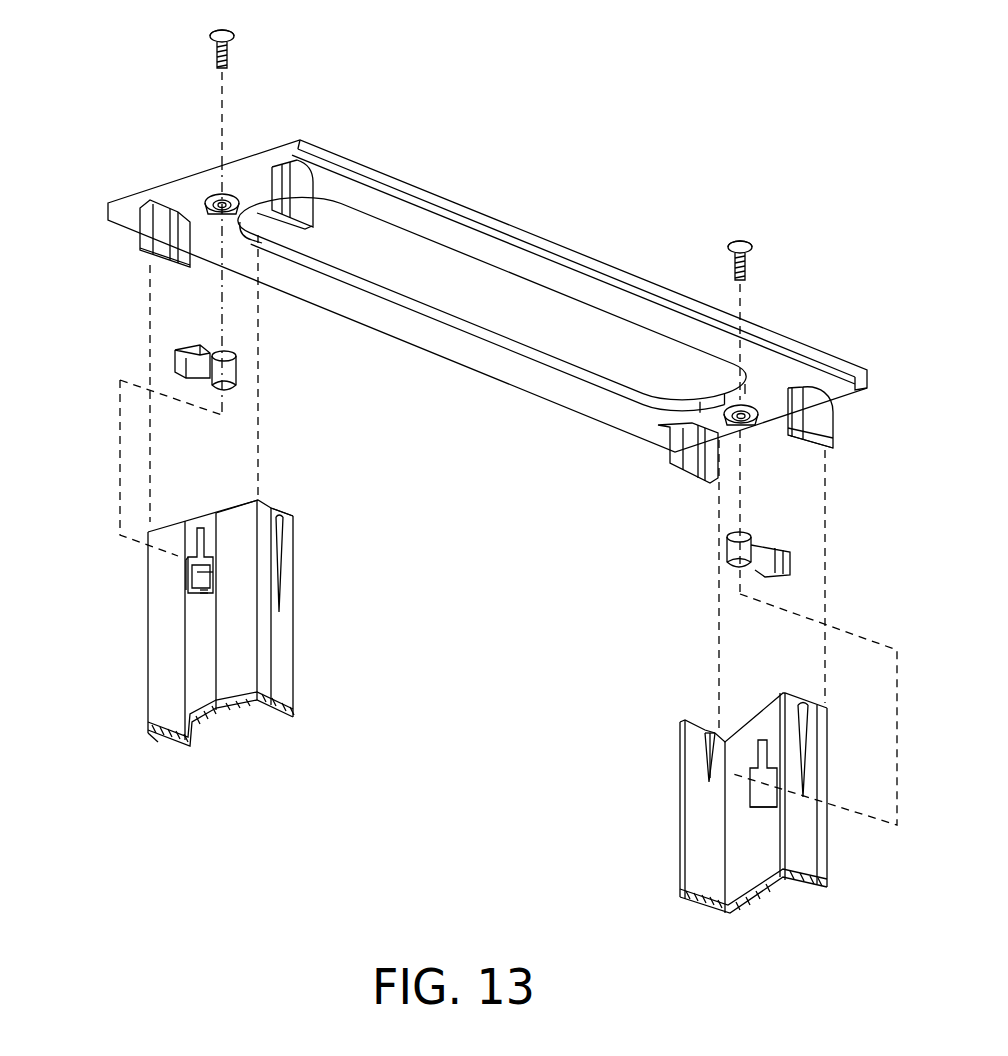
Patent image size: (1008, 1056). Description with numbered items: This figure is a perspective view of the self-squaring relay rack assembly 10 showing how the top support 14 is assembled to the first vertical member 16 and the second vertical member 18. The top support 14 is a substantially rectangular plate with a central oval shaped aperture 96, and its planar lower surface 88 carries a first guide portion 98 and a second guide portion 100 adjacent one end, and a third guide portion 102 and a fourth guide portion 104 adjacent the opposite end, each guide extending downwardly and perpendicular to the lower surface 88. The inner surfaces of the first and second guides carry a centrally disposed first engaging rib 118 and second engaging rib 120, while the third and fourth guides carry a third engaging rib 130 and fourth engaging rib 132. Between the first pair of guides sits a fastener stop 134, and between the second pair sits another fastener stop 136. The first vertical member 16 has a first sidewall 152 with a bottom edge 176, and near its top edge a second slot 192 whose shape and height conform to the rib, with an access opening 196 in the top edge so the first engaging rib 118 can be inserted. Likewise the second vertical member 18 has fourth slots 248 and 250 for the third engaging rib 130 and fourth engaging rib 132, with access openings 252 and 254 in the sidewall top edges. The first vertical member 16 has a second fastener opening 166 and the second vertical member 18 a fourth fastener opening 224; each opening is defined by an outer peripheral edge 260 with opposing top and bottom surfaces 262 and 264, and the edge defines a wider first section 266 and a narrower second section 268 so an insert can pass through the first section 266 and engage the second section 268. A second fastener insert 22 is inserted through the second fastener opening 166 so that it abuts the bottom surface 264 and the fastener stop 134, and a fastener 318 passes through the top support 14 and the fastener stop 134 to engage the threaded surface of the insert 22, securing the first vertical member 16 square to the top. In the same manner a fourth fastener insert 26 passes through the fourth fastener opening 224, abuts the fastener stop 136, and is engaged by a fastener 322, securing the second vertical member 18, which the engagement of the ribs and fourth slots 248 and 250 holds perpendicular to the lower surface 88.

The self-squaring relay rack assembly 10 is at (665, 200).
The top support 14 is at (508, 218).
The first vertical member 16 is at (130, 708).
The second vertical member 18 is at (645, 884).
The second fastener insert 22 is at (252, 367).
The fourth fastener insert 26 is at (712, 549).
The lower surface 88 is at (390, 207).
The central oval shaped aperture 96 is at (483, 335).
The first guide portion 98 is at (313, 217).
The second guide portion 100 is at (128, 248).
The third guide portion 102 is at (851, 423).
The fourth guide portion 104 is at (655, 464).
The first engaging rib 118 is at (270, 238).
The second engaging rib 120 is at (148, 200).
The third engaging rib 130 is at (790, 447).
The fourth engaging rib 132 is at (672, 447).
The fastener stop 134 is at (215, 195).
The fastener stop 136 is at (757, 410).
The first sidewall 152 is at (284, 658).
The second fastener opening 166 is at (198, 600).
The bottom edge 176 is at (265, 502).
The second slot 192 is at (284, 562).
The access opening 196 is at (288, 513).
The fourth fastener opening 224 is at (758, 812).
The fourth slot 248 is at (810, 730).
The fourth slot 250 is at (703, 765).
The access opening 252 is at (805, 702).
The access opening 254 is at (705, 745).
The outer peripheral edge 260 is at (207, 590).
The top surface 262 is at (195, 585).
The bottom surface 264 is at (210, 520).
The first section 266 is at (212, 568).
The second section 268 is at (195, 535).
The fastener 318 is at (242, 42).
The fastener 322 is at (752, 243).